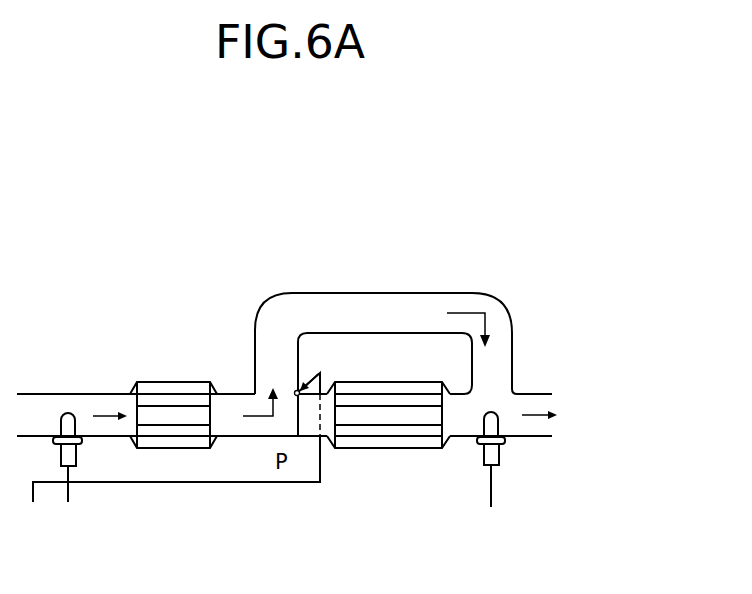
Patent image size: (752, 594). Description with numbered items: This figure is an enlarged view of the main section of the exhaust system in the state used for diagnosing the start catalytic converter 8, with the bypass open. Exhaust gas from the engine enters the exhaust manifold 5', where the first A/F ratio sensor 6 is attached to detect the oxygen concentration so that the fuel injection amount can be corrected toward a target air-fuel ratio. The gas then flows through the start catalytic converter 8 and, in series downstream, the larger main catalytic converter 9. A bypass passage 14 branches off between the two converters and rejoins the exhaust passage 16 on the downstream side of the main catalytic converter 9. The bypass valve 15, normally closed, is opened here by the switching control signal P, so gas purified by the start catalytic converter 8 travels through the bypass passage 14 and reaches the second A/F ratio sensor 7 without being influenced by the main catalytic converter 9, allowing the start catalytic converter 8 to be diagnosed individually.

The exhaust manifold 5' is at (136, 366).
The start catalytic converter 8 is at (165, 382).
The bypass valve 15 is at (297, 391).
The bypass passage 14 is at (283, 300).
The main catalytic converter 9 is at (420, 382).
The exhaust passage 16 is at (527, 394).
The first A/F ratio sensor 6 is at (82, 457).
The second A/F ratio sensor 7 is at (505, 454).